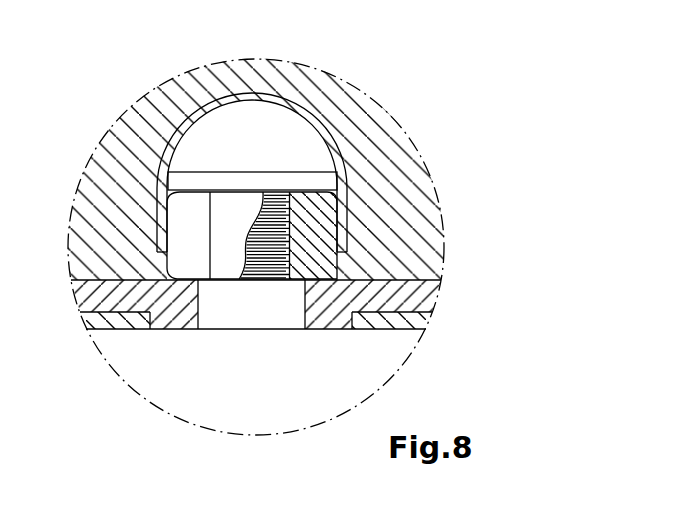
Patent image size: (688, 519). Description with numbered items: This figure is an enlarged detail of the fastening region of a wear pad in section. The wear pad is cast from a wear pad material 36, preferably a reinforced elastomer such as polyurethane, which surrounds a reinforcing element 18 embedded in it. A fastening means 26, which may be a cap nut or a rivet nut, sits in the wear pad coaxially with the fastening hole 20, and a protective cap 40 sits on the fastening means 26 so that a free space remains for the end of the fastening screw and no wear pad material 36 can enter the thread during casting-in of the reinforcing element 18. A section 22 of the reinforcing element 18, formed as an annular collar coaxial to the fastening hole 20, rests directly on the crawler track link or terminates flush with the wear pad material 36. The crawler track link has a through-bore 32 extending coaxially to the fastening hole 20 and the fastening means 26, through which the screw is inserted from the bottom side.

The reinforcing element 18 is at (440, 297).
The fastening hole 20 is at (239, 347).
The section of the reinforcing element 22 is at (172, 323).
The fastening means 26 is at (316, 225).
The through-bore 32 is at (283, 332).
The wear pad material 36 is at (380, 152).
The protective cap 40 is at (290, 97).